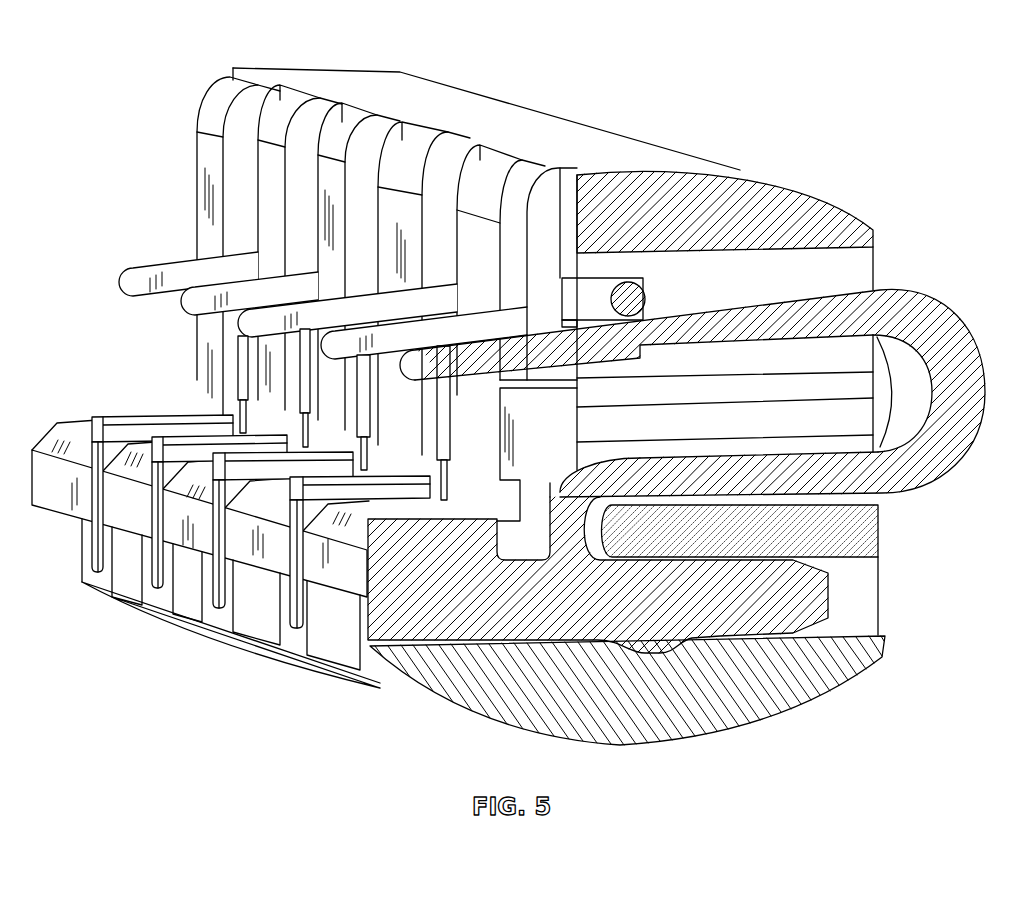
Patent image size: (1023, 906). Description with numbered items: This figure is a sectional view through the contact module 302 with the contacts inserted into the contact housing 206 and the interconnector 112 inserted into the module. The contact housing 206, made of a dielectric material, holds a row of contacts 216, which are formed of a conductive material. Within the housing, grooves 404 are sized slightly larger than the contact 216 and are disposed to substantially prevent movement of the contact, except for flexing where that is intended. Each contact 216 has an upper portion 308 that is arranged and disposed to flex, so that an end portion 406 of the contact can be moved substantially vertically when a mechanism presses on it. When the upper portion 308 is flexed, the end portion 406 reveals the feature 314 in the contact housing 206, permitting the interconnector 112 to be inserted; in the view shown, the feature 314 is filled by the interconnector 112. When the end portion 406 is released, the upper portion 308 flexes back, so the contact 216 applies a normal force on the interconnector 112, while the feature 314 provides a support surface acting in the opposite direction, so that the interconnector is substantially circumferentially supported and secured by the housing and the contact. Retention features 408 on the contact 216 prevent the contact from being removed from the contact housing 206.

The contact module 302 is at (520, 416).
The feature 314 is at (546, 276).
The contact housing 206 is at (733, 187).
The interconnector 112 is at (638, 298).
The grooves 404 is at (860, 275).
The upper portion 308 is at (930, 322).
The contact 216 is at (542, 528).
The retention features 408 is at (767, 640).
The end portion 406 is at (420, 386).